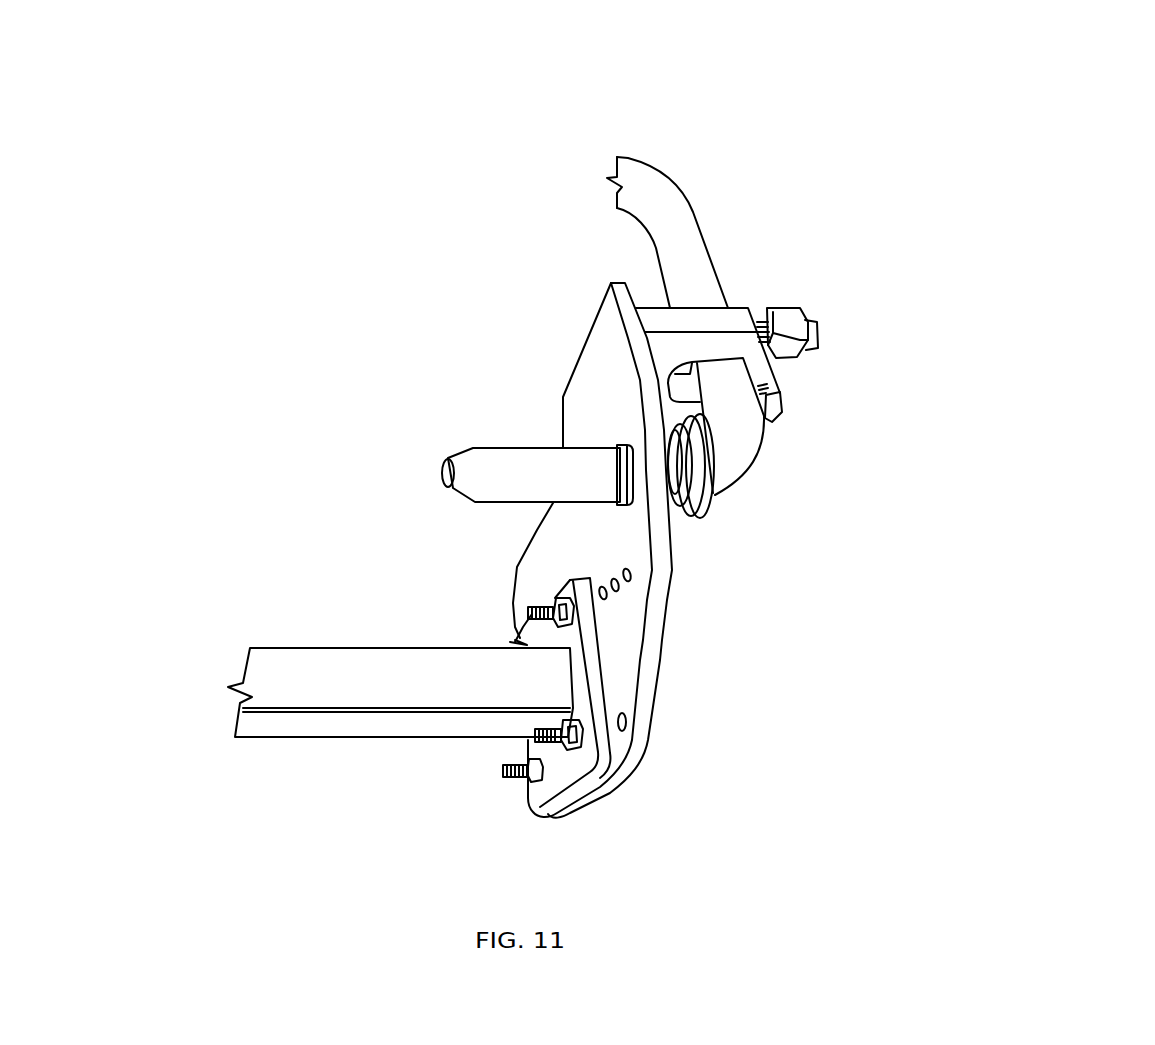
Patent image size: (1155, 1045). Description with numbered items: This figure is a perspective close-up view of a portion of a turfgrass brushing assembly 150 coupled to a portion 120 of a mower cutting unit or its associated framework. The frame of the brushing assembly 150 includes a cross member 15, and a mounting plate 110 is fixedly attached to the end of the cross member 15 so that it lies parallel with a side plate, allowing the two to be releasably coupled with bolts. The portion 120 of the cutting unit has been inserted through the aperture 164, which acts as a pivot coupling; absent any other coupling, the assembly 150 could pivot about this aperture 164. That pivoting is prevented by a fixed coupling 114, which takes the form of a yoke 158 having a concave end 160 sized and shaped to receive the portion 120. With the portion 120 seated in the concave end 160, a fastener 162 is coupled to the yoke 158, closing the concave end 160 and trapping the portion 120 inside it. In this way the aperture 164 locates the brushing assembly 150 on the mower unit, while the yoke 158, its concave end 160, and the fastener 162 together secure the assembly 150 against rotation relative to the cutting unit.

The cross member 15 is at (322, 673).
The mounting plate 110 is at (562, 770).
The fixed coupling 114 is at (666, 323).
The portion of the mower cutting unit 120 is at (507, 470).
The turfgrass brushing assembly 150 is at (682, 434).
The yoke 158 is at (672, 350).
The concave end 160 is at (728, 350).
The fastener 162 is at (787, 320).
The aperture 164 is at (615, 450).